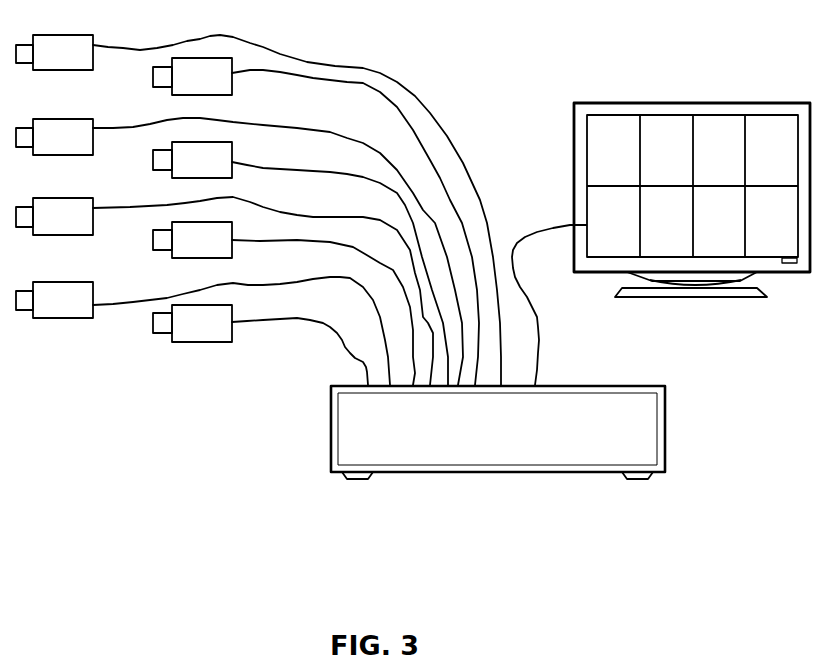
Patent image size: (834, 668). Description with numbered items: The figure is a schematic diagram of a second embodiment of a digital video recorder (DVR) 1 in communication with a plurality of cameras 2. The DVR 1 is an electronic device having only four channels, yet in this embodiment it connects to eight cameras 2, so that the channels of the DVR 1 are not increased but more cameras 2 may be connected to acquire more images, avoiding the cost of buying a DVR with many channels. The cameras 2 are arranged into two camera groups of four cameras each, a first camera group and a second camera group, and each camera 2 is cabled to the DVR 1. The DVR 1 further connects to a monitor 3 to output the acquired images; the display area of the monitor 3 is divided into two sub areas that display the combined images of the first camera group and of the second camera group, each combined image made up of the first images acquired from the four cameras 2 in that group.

The digital video recorder (DVR) 1 is at (572, 384).
The camera 2 is at (67, 70).
The monitor 3 is at (643, 107).